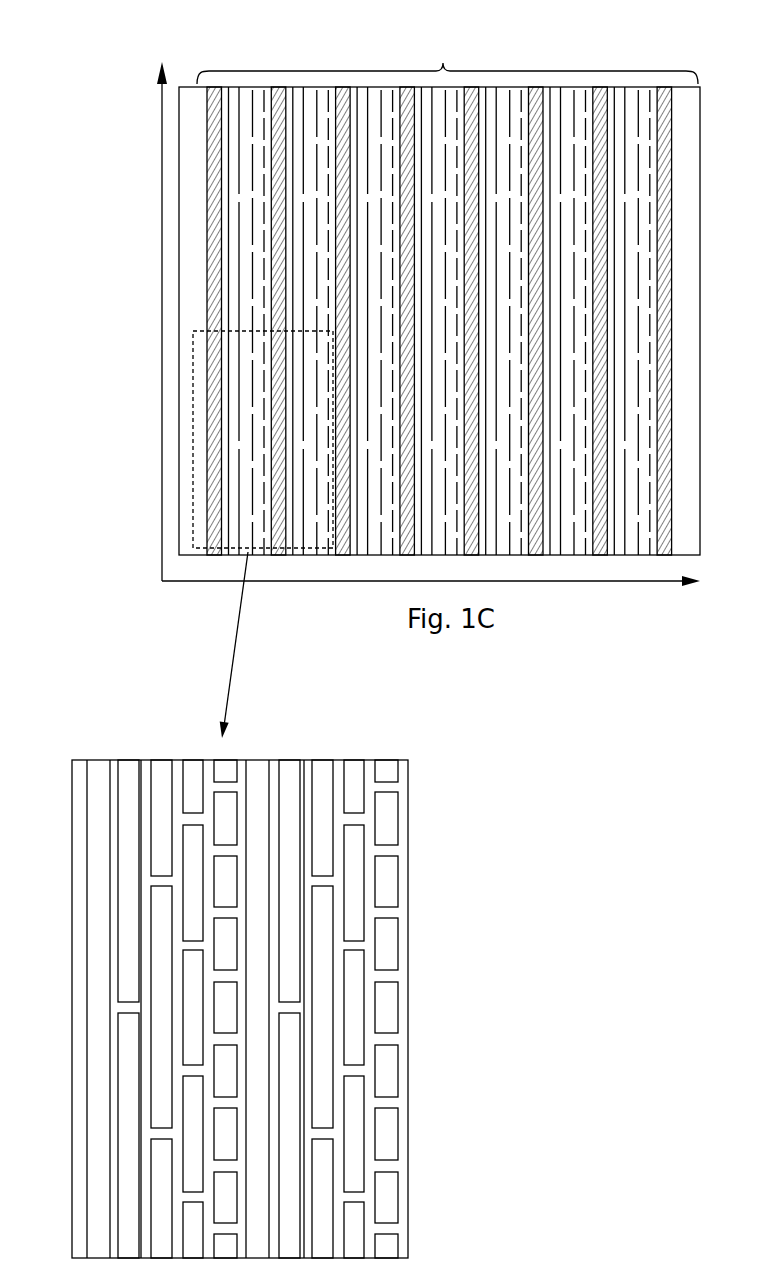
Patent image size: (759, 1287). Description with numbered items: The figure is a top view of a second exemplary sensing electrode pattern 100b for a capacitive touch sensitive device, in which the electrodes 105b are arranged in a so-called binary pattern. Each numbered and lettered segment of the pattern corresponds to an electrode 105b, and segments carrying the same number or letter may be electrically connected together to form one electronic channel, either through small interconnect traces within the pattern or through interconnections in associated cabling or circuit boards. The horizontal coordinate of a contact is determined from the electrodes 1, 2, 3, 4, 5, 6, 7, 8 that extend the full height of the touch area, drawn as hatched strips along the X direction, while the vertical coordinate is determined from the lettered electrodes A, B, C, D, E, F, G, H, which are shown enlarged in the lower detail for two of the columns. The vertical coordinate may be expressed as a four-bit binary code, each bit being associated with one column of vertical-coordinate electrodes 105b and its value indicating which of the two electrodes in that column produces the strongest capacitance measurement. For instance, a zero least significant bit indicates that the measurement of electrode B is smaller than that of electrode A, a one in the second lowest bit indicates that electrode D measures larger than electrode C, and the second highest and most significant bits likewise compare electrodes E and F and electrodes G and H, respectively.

The sensing electrode pattern 100b is at (110, 106).
The electrodes 105b is at (443, 64).
The electrode 1 is at (213, 334).
The electrode 2 is at (278, 334).
The electrode 3 is at (343, 334).
The electrode 4 is at (406, 334).
The electrode 5 is at (471, 334).
The electrode 6 is at (536, 334).
The electrode 7 is at (599, 334).
The electrode 8 is at (664, 334).
The electrode A is at (306, 1008).
The electrode B is at (306, 1007).
The electrode C is at (273, 1009).
The electrode D is at (273, 1008).
The electrode E is at (242, 1009).
The electrode F is at (242, 1007).
The electrode G is at (209, 881).
The electrode H is at (209, 1135).